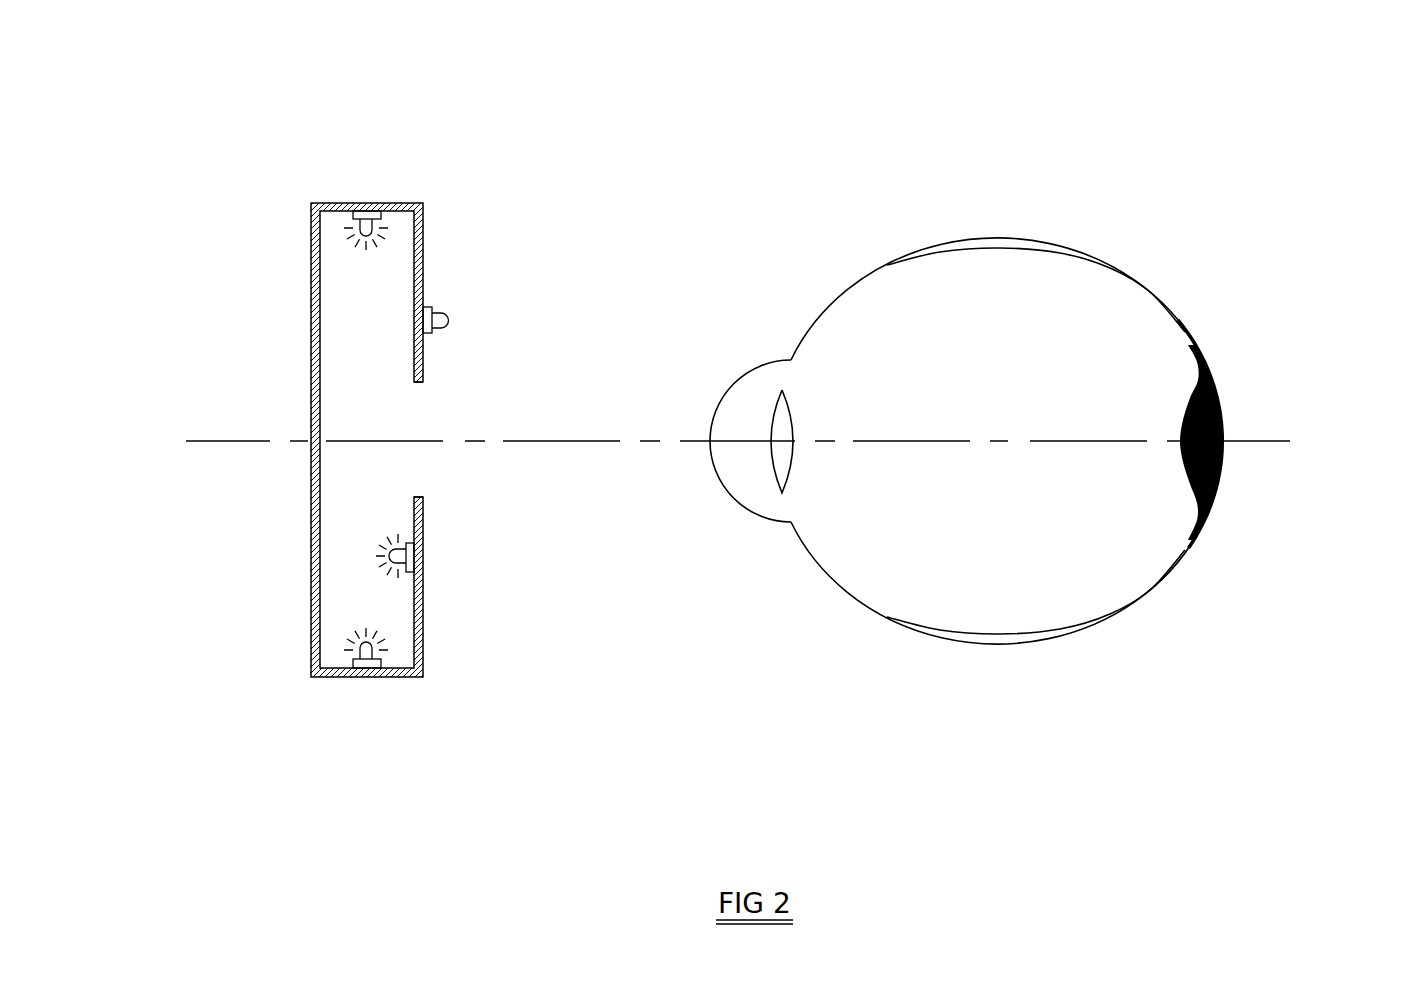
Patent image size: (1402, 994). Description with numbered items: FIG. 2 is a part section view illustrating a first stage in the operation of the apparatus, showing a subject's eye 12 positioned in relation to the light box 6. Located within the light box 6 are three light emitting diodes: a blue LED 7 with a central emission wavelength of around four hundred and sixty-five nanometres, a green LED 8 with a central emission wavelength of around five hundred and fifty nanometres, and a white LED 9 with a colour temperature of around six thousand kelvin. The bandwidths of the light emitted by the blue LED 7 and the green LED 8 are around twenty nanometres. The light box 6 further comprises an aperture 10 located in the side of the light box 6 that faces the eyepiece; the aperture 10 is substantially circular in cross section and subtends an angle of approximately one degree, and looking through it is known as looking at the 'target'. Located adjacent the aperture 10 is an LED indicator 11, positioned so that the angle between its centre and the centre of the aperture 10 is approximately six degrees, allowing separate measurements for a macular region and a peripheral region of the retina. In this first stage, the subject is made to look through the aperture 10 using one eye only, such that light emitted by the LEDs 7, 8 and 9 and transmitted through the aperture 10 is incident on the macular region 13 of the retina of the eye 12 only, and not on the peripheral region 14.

The light box 6 is at (300, 324).
The blue LED 7 is at (373, 213).
The green LED 8 is at (372, 677).
The white LED 9 is at (412, 553).
The aperture 10 is at (422, 408).
The LED indicator 11 is at (442, 308).
The subject's eye 12 is at (1002, 218).
The macular region 13 is at (1218, 417).
The peripheral region 14 is at (1080, 257).